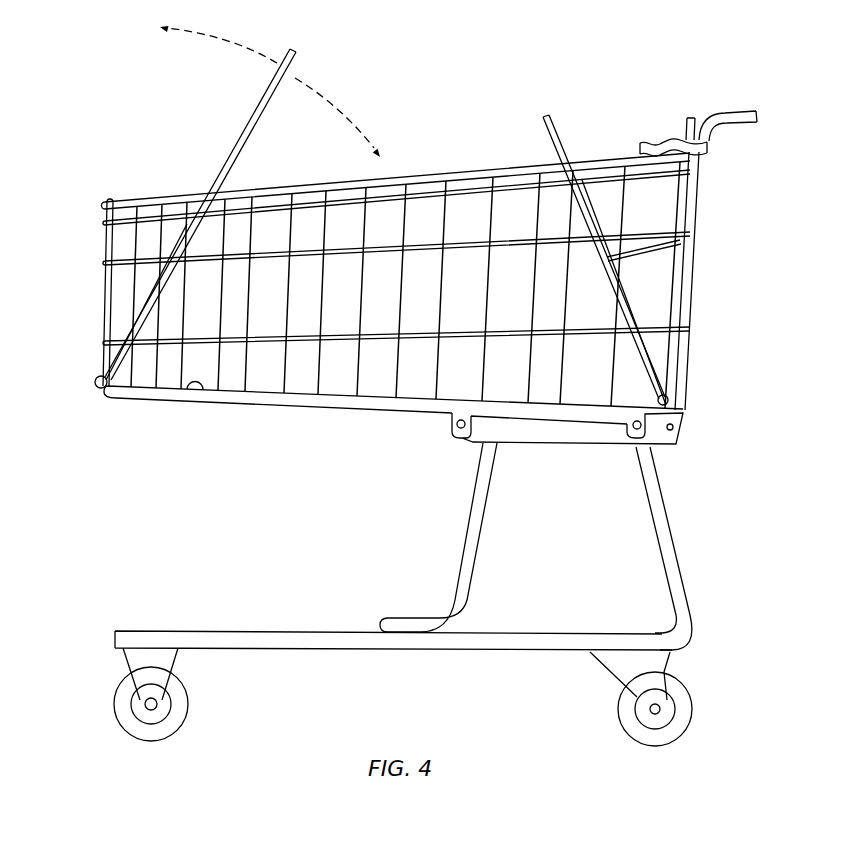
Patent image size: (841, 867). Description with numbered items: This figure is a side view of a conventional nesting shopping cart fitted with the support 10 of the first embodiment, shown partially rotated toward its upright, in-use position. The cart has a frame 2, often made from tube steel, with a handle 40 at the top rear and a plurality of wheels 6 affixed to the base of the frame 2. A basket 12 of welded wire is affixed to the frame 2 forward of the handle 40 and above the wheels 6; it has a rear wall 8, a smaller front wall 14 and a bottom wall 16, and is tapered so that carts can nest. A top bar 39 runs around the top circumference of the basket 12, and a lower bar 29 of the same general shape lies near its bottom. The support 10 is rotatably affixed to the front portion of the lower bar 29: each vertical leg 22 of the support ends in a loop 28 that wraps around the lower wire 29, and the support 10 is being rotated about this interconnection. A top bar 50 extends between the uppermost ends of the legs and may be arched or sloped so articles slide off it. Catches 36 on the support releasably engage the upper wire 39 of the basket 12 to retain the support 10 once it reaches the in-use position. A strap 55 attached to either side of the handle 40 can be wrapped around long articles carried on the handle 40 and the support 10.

The frame 2 is at (268, 631).
The wheels 6 is at (179, 708).
The rear wall 8 is at (706, 336).
The support 10 is at (110, 140).
The basket 12 is at (480, 100).
The front wall 14 is at (100, 303).
The bottom wall 16 is at (285, 432).
The vertical leg 22 is at (237, 136).
The loop 28 is at (98, 380).
The lower bar 29 is at (195, 382).
The catches 36 is at (182, 226).
The top bar 39 is at (275, 186).
The handle 40 is at (757, 117).
The top bar 50 is at (300, 46).
The strap 55 is at (648, 142).